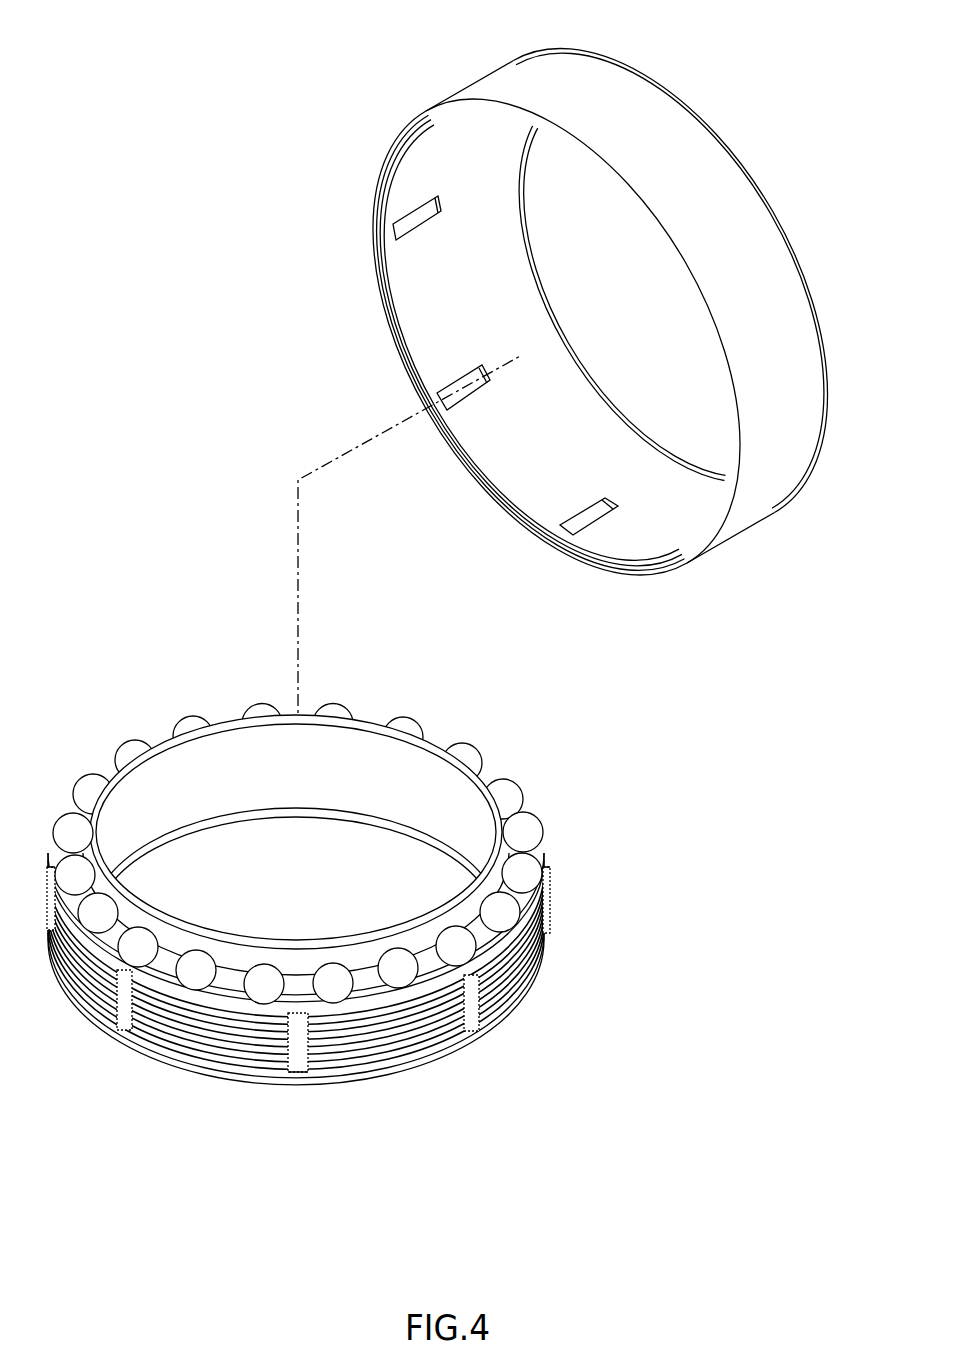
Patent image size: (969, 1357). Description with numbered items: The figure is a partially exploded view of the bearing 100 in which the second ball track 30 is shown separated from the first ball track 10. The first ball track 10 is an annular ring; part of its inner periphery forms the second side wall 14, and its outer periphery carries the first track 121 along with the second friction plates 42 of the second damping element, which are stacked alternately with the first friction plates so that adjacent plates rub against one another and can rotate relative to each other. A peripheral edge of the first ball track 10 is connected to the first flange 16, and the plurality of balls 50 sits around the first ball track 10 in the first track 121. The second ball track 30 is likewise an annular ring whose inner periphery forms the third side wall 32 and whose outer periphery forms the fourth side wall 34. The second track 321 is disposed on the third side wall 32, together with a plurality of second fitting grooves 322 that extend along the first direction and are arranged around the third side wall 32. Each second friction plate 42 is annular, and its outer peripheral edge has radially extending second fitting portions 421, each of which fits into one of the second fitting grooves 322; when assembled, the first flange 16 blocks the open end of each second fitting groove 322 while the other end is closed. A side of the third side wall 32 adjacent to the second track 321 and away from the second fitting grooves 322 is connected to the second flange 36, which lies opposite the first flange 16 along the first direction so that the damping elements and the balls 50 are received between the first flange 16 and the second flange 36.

The bearing 100 is at (705, 62).
The first ball track 10 is at (351, 908).
The second side wall 14 is at (178, 766).
The first flange 16 is at (523, 1000).
The first track 121 is at (543, 942).
The second friction plates 42 is at (350, 985).
The second fitting portions 421 is at (550, 868).
The balls 50 is at (351, 908).
The second ball track 30 is at (584, 319).
The third side wall 32 is at (415, 273).
The second track 321 is at (503, 180).
The second fitting grooves 322 is at (400, 221).
The fourth side wall 34 is at (730, 200).
The second flange 36 is at (788, 233).